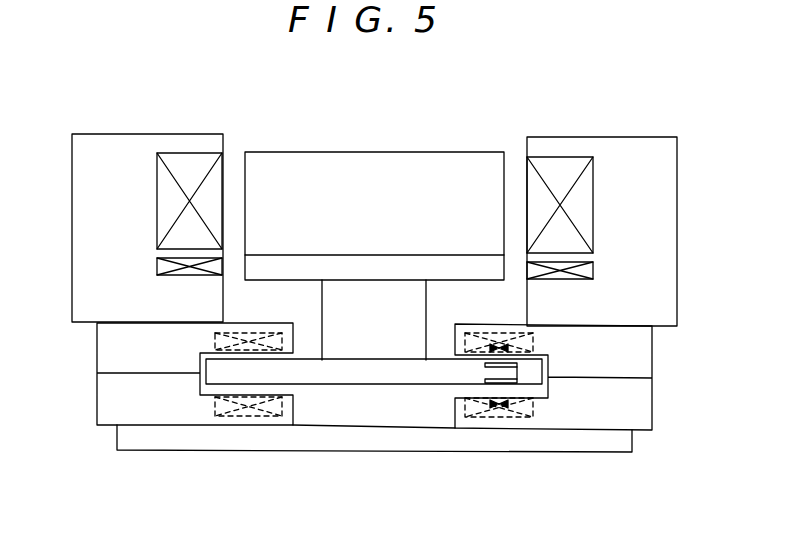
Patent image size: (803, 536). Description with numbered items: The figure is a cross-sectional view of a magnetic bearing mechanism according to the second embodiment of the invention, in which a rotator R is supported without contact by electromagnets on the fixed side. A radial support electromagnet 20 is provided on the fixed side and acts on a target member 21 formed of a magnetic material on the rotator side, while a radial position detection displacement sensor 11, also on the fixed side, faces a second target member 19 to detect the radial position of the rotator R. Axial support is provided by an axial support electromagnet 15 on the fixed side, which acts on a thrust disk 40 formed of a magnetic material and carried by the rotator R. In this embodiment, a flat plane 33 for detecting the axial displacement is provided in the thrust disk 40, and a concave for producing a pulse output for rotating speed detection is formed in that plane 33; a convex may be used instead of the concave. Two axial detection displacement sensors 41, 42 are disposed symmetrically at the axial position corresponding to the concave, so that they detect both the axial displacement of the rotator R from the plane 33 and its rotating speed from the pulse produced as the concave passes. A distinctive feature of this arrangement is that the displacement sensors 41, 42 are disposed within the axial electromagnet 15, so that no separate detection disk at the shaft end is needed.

The rotator R is at (313, 150).
The target member 21 is at (504, 174).
The target member 19 is at (504, 262).
The radial support electromagnet 20 is at (593, 210).
The radial position detection displacement sensor 11 is at (593, 267).
The axial support electromagnet 15 is at (215, 340).
The detection plane 33 is at (443, 384).
The thrust disk 40 is at (327, 384).
The axial detection displacement sensor 42 is at (508, 348).
The axial detection displacement sensor 41 is at (499, 410).